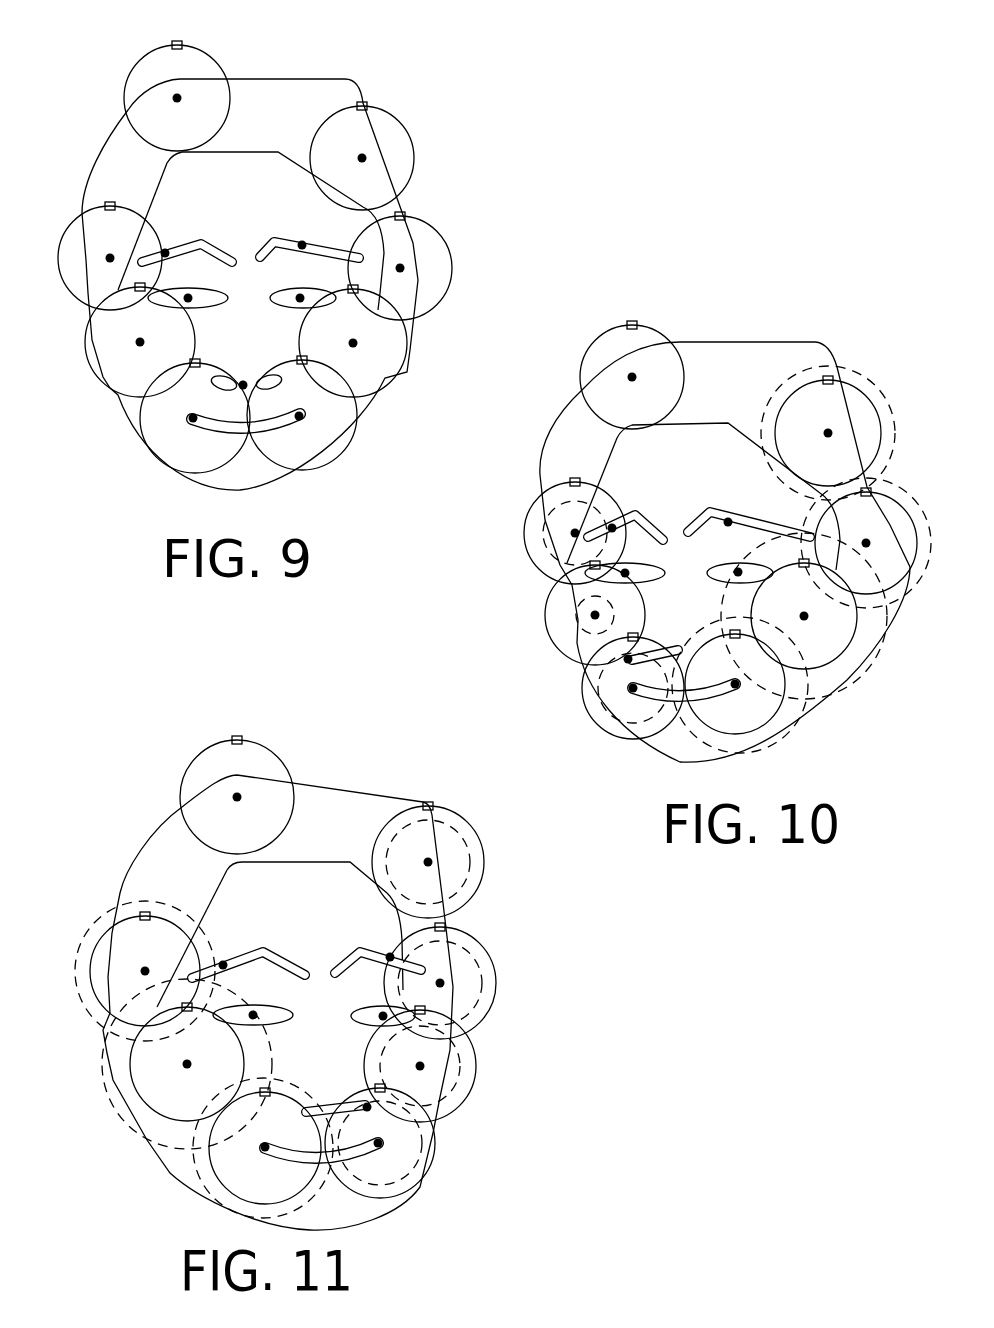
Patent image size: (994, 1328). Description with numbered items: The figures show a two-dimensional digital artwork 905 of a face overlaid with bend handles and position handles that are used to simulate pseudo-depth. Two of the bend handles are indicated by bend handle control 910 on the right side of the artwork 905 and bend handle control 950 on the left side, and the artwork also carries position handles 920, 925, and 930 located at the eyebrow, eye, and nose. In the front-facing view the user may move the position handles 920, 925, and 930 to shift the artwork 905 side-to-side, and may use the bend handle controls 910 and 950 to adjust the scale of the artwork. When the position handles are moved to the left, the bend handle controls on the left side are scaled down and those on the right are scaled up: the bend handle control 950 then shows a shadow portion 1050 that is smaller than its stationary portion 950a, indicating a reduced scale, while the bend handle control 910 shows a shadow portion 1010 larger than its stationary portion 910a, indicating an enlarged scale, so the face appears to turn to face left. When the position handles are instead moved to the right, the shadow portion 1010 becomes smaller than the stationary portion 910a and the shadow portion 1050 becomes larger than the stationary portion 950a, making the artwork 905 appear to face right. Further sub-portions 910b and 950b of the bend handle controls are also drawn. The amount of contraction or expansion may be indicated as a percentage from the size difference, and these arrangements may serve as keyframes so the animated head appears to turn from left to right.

In FIG. 9, the digital artwork 905 is at (305, 58).
In FIG. 10, the digital artwork 905 is at (778, 323).
In FIG. 11, the digital artwork 905 is at (130, 817).
In FIG. 9, the bend handle control 910 is at (380, 400).
In FIG. 10, the bend handle control 910 is at (830, 720).
In FIG. 11, the bend handle control 910 is at (492, 1050).
In FIG. 9, the stationary portion 910a is at (405, 362).
In FIG. 10, the stationary portion 910a is at (840, 660).
In FIG. 11, the stationary portion 910a is at (430, 1093).
In FIG. 9, the right middle sub-region 910b is at (353, 343).
In FIG. 10, the right middle sub-region 910b is at (804, 616).
In FIG. 11, the right middle sub-region 910b is at (420, 1066).
In FIG. 9, the position handle 920 is at (302, 245).
In FIG. 9, the position handle 925 is at (188, 298).
In FIG. 9, the position handle 930 is at (243, 385).
In FIG. 9, the bend handle control 950 is at (75, 365).
In FIG. 10, the bend handle control 950 is at (558, 622).
In FIG. 11, the bend handle control 950 is at (113, 1130).
In FIG. 9, the stationary portion 950a is at (103, 387).
In FIG. 10, the stationary portion 950a is at (550, 647).
In FIG. 11, the stationary portion 950a is at (127, 1075).
In FIG. 9, the left middle sub-region 950b is at (140, 342).
In FIG. 10, the left middle sub-region 950b is at (595, 615).
In FIG. 11, the left middle sub-region 950b is at (187, 1064).
In FIG. 10, the shadow portion 1010 is at (830, 693).
In FIG. 11, the shadow portion 1010 is at (422, 1097).
In FIG. 10, the shadow portion 1050 is at (580, 608).
In FIG. 11, the shadow portion 1050 is at (120, 1108).